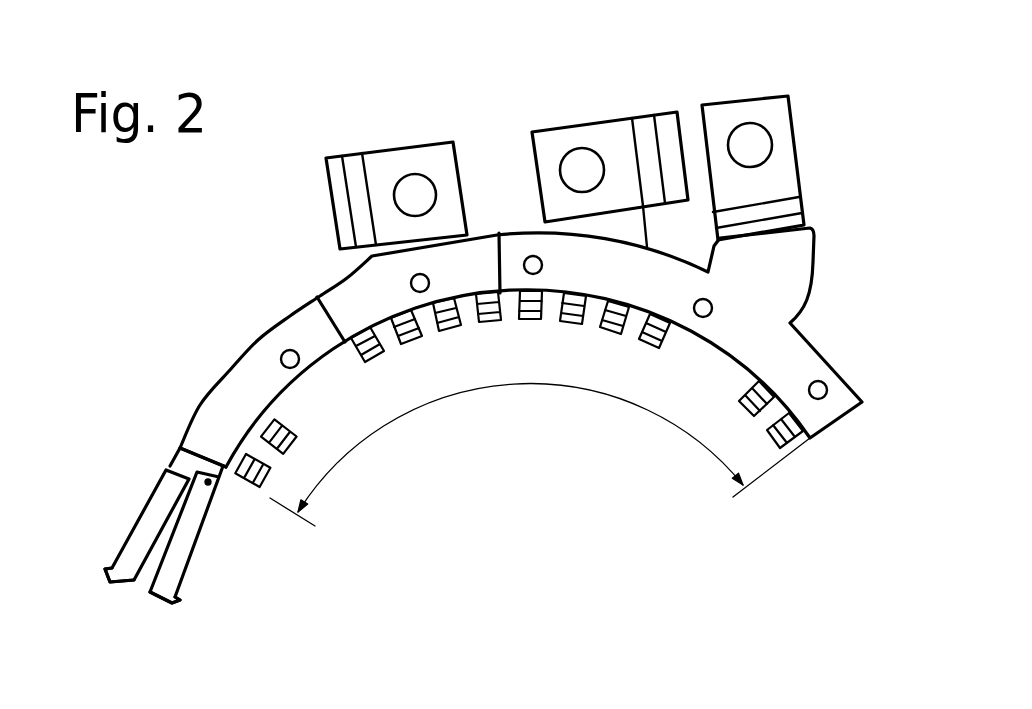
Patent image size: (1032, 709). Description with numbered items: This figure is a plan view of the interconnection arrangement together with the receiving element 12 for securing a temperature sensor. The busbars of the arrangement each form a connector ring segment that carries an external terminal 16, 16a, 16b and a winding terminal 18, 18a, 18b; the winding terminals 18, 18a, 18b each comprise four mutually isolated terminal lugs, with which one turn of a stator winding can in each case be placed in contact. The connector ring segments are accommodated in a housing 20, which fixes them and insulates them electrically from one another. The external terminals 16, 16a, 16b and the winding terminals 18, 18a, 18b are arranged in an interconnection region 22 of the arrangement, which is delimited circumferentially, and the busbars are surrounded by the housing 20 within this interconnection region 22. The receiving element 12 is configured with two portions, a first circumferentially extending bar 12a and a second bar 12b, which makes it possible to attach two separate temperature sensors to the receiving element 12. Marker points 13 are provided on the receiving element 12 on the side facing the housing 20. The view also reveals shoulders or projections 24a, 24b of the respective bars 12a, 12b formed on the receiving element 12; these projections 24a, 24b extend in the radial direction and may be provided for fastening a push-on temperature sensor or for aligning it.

The receiving element 12 is at (199, 535).
The first circumferentially extending bar 12a is at (133, 537).
The second bar 12b is at (183, 551).
The marker points 13 is at (176, 458).
The external terminal 16 is at (374, 172).
The external terminal 16a is at (551, 168).
The external terminal 16b is at (718, 130).
The winding terminal 18 is at (409, 348).
The winding terminal 18a is at (653, 345).
The winding terminal 18b is at (259, 482).
The housing 20 is at (238, 392).
The interconnection region 22 is at (536, 384).
The projection 24a is at (113, 575).
The projection 24b is at (176, 600).